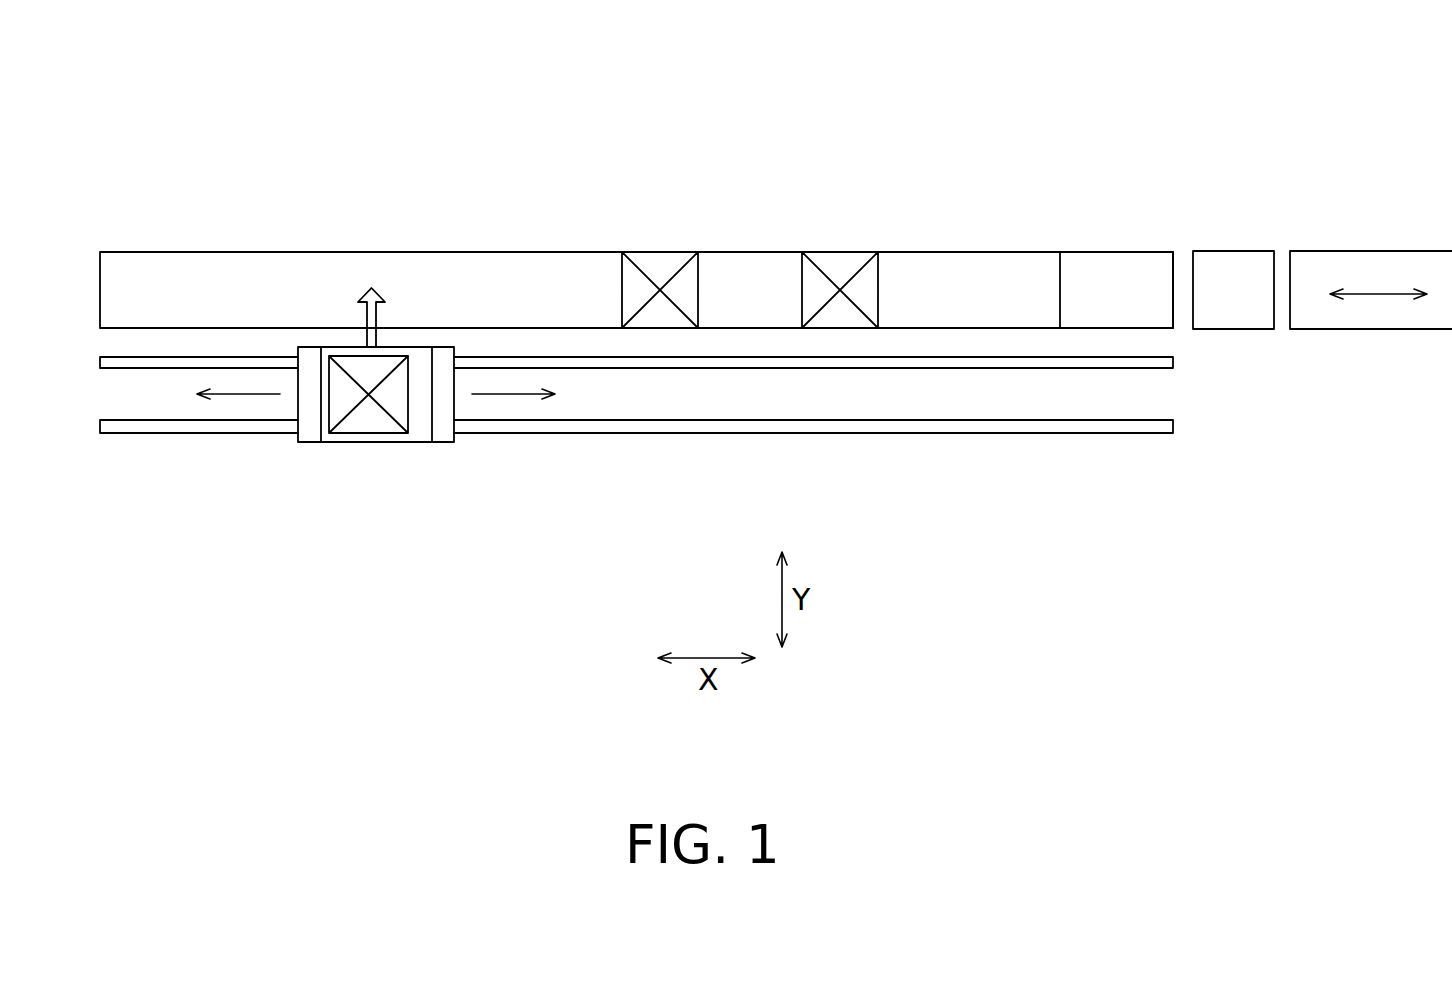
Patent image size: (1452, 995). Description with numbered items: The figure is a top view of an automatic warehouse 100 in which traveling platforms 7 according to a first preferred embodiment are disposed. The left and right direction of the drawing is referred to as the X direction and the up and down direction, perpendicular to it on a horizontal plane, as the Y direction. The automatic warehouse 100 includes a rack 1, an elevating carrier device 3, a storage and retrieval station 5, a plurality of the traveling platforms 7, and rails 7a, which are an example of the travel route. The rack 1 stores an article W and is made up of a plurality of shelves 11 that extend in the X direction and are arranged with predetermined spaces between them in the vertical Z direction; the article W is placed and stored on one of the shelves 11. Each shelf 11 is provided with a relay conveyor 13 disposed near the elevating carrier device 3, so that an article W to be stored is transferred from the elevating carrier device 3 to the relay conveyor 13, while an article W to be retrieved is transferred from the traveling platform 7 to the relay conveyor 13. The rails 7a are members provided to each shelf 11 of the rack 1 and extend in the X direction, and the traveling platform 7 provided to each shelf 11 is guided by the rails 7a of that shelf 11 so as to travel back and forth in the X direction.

The automatic warehouse 100 is at (1328, 148).
The rack 1 is at (753, 150).
The shelf 11 is at (458, 260).
The relay conveyor 13 is at (1115, 267).
The traveling platform 7 is at (443, 435).
The rail 7a is at (913, 364).
The article W is at (665, 260).
The elevating carrier device 3 is at (1237, 329).
The storage and retrieval station 5 is at (1377, 329).